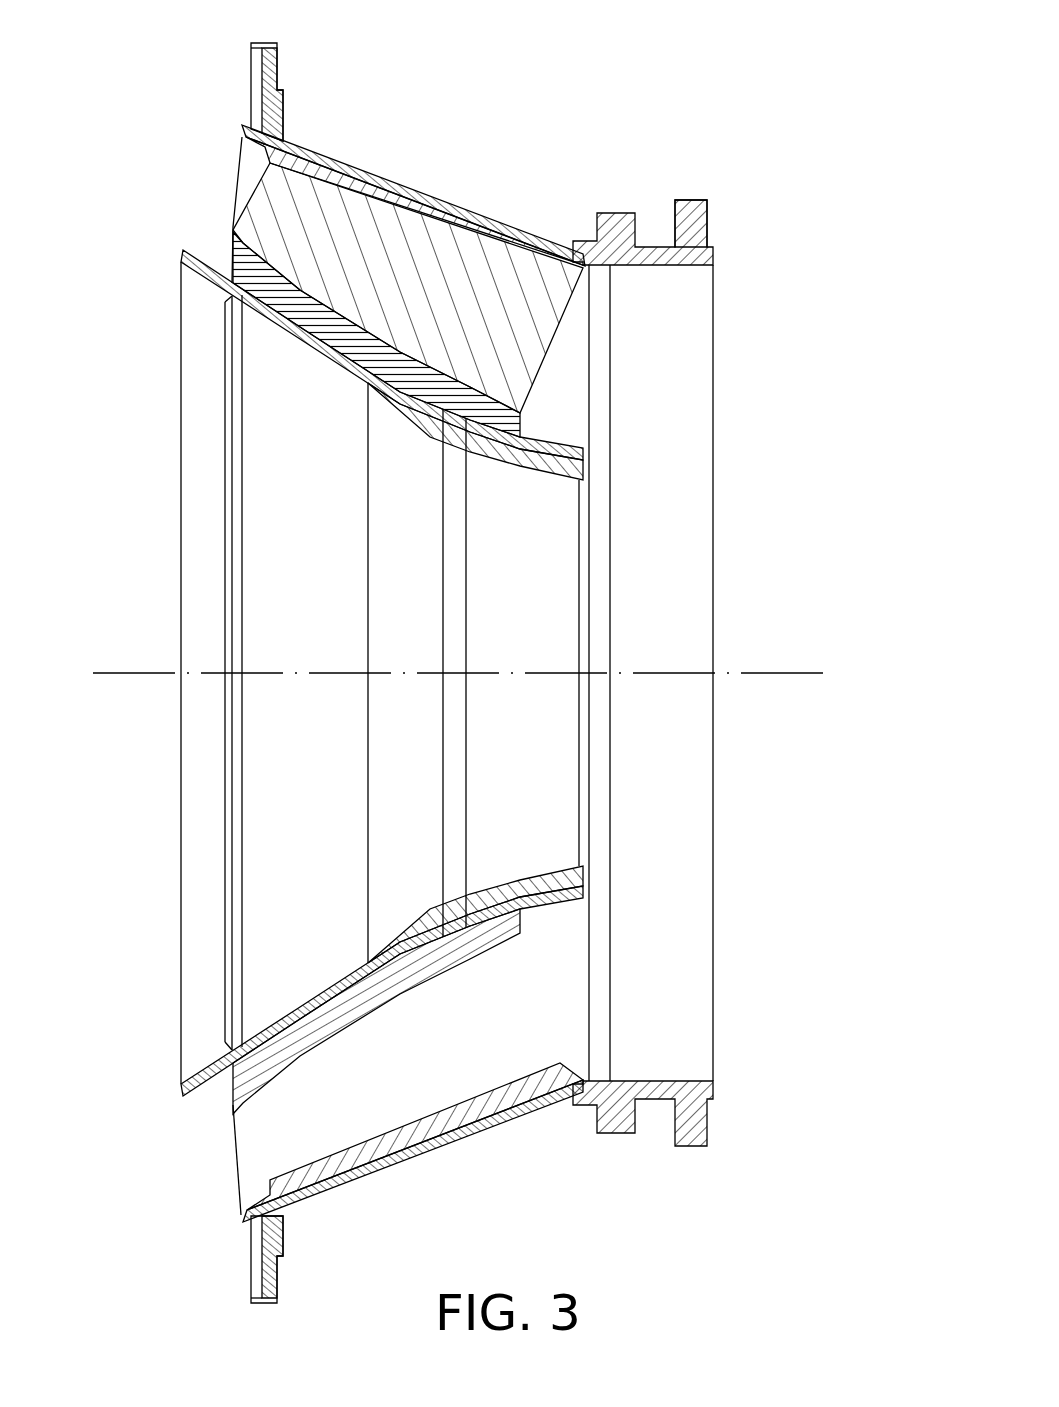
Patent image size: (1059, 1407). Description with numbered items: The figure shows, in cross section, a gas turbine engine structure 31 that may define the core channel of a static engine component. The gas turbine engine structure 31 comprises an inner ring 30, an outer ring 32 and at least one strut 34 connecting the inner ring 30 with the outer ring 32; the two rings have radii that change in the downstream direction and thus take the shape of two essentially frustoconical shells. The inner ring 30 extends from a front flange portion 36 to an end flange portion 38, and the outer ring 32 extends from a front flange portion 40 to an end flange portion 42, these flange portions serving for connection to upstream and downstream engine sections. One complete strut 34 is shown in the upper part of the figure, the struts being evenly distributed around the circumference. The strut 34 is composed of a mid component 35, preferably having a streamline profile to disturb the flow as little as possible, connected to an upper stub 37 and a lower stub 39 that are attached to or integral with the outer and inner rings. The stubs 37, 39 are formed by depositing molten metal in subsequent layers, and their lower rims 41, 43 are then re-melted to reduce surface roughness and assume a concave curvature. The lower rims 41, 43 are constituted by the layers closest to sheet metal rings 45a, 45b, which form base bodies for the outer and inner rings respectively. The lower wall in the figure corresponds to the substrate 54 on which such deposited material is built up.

The inner ring 30 is at (565, 443).
The gas turbine engine structure 31 is at (741, 77).
The outer ring 32 is at (572, 258).
The strut 34 is at (347, 138).
The mid component 35 is at (368, 264).
The front flange portion 36 is at (185, 268).
The upper stub 37 is at (478, 214).
The end flange portion 38 is at (577, 478).
The lower stub 39 is at (333, 355).
The front flange portion 40 is at (251, 83).
The lower rim 41 is at (262, 162).
The end flange portion 42 is at (708, 213).
The lower rim 43 is at (240, 232).
The sheet metal ring 45a is at (548, 244).
The sheet metal ring 45b is at (333, 337).
The substrate 54 is at (400, 1067).